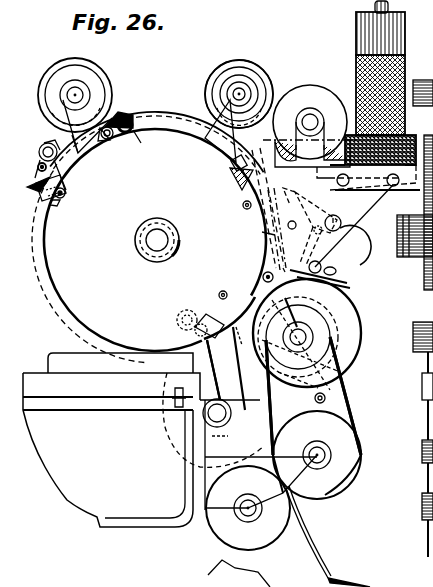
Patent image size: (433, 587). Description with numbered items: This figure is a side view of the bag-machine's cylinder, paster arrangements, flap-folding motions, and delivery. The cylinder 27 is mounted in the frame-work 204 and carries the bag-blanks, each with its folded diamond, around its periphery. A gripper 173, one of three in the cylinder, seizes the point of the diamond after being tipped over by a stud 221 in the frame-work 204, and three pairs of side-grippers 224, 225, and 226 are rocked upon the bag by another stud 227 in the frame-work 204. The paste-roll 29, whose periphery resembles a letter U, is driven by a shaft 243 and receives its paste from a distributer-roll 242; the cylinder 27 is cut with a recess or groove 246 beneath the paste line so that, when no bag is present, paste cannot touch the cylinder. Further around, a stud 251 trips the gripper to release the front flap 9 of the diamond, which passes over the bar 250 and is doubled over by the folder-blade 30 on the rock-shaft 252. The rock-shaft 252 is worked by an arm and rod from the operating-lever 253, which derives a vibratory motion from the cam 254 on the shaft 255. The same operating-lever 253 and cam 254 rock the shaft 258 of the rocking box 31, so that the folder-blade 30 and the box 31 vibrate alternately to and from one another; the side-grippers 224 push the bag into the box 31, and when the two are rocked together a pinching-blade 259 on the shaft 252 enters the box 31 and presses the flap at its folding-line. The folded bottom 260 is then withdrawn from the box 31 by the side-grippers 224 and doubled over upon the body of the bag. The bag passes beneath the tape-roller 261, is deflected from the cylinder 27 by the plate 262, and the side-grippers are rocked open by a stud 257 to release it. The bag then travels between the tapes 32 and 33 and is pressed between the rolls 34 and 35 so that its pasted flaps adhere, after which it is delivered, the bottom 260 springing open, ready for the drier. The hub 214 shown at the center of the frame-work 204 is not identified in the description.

The frame-work 204 is at (149, 298).
The cylinder 27 is at (203, 143).
The hub 214 is at (157, 239).
The recess or groove 246 is at (147, 113).
The stud 221 is at (37, 160).
The stud 227 is at (107, 138).
The side-grippers 226 is at (55, 202).
The shaft 243 is at (236, 94).
The paste-roll 29 is at (236, 66).
The side-grippers 224 is at (232, 164).
The distributer-roll 242 is at (311, 126).
The stud 251 is at (243, 205).
The bar 250 is at (259, 229).
The folder-blade 30 is at (310, 210).
The flap 9 is at (305, 243).
The rock-shaft 252 is at (336, 216).
The pinching-blade 259 is at (359, 241).
The rock-shaft 258 is at (322, 268).
The rocking box 31 is at (340, 281).
The gripper 173 is at (263, 278).
The stud 257 is at (219, 295).
The side-grippers 225 is at (208, 328).
The tape-roller 261 is at (307, 367).
The shaft 255 is at (298, 337).
The cam 254 is at (308, 375).
The operating-lever 253 is at (323, 399).
The tape 33 is at (262, 423).
The plate 262 is at (230, 392).
The tape 32 is at (358, 425).
The roll 34 is at (317, 455).
The roll 35 is at (248, 508).
The bottom 260 is at (365, 580).